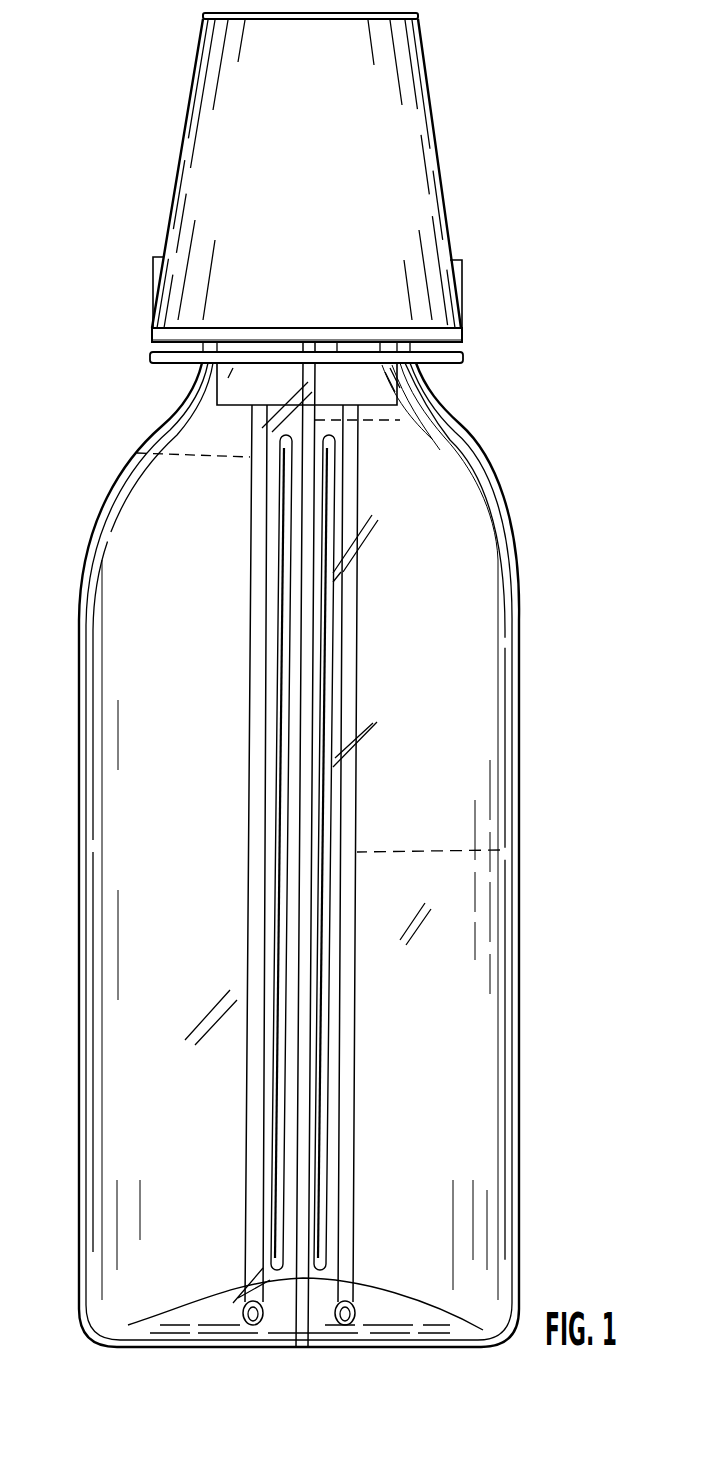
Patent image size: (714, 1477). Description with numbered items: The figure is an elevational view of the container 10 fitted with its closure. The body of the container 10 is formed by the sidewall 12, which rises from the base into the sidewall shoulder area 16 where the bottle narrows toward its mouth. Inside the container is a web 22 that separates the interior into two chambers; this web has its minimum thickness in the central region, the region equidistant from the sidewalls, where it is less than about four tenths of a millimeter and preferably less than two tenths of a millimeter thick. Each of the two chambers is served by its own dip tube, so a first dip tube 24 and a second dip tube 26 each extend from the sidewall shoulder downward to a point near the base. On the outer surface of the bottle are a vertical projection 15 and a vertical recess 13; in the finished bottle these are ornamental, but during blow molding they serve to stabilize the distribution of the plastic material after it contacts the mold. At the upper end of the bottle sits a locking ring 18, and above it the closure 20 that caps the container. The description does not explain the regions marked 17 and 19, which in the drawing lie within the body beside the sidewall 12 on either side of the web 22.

The container 10 is at (552, 511).
The sidewall 12 is at (520, 922).
The vertical recess 13 is at (328, 798).
The vertical projection 15 is at (277, 797).
The sidewall shoulder area 16 is at (456, 429).
The right compartment 17 is at (443, 1055).
The locking ring 18 is at (464, 358).
The left compartment 19 is at (130, 1110).
The closure 20 is at (444, 179).
The web 22 is at (428, 403).
The dip tube 24 is at (137, 453).
The dip tube 26 is at (500, 850).